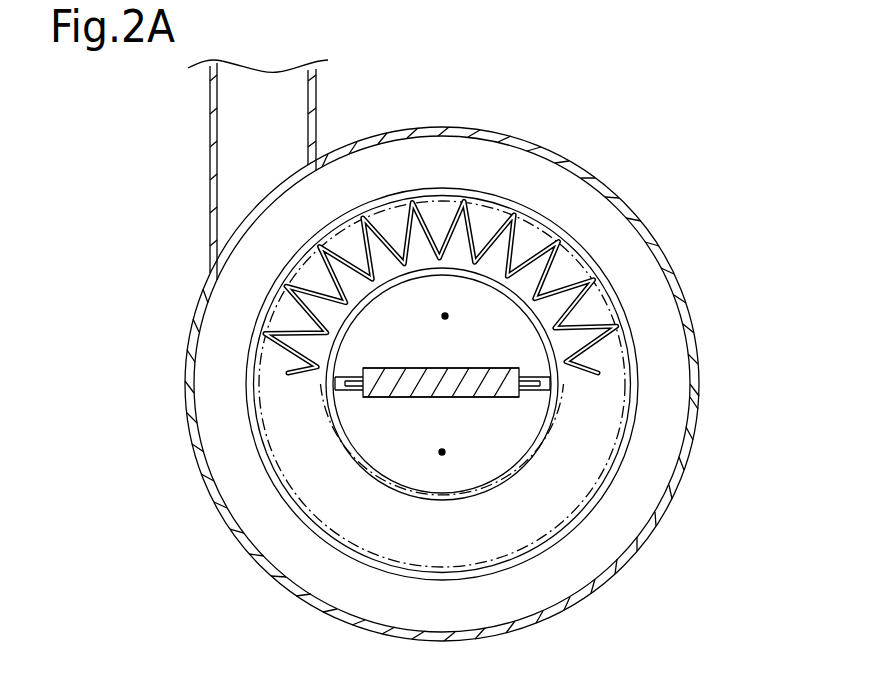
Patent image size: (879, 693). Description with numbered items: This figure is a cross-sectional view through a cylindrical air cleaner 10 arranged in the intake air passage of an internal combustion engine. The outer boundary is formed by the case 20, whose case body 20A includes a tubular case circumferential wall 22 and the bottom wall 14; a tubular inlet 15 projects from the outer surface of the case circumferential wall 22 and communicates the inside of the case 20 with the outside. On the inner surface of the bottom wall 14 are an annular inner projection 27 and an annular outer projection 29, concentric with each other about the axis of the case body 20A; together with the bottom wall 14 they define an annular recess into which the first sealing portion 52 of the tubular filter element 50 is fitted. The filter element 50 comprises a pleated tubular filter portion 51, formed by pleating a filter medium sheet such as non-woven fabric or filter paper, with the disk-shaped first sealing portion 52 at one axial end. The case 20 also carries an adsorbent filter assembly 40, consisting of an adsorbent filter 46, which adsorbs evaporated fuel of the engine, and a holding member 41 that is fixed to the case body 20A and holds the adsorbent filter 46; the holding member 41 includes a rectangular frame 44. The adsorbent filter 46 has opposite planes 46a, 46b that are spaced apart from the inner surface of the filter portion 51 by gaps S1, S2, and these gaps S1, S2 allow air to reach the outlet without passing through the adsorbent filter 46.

The air cleaner 10 is at (740, 97).
The bottom wall 14 is at (262, 530).
The inlet 15 is at (208, 153).
The case 20 is at (573, 157).
The case body 20A is at (627, 565).
The case circumferential wall 22 is at (425, 125).
The inner projection 27 is at (555, 413).
The outer projection 29 is at (248, 403).
The adsorbent filter assembly 40 is at (343, 660).
The holding member 41 is at (336, 393).
The rectangular frame 44 is at (540, 392).
The adsorbent filter 46 is at (377, 400).
The plane 46a is at (407, 398).
The plane 46b is at (385, 368).
The filter element 50 is at (592, 312).
The filter portion 51 is at (543, 247).
The first sealing portion 52 is at (441, 213).
The gap S1 is at (444, 450).
The gap S2 is at (448, 316).